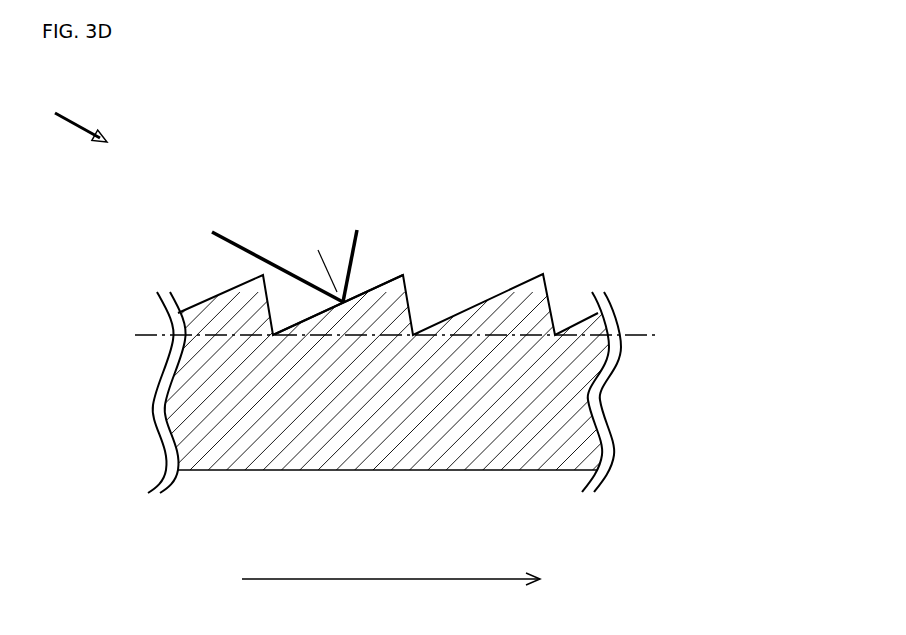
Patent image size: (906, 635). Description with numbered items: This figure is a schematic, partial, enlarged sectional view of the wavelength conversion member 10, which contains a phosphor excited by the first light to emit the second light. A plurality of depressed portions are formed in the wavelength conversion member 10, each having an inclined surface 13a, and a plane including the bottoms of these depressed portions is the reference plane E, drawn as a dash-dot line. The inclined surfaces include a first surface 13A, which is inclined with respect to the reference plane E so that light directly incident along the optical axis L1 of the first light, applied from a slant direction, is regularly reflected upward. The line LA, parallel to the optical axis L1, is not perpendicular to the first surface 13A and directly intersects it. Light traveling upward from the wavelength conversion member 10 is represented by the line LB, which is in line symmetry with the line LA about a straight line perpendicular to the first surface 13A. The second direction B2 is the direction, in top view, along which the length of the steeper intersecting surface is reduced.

The wavelength conversion member 10 is at (447, 453).
The first surface 13A is at (379, 277).
The inclined surface 13a is at (390, 245).
The optical axis of the first light L1 is at (85, 125).
The line parallel to the optical axis LA is at (233, 232).
The line representing upward-traveling light LB is at (350, 247).
The reference plane E is at (408, 335).
The second direction B2 is at (391, 594).